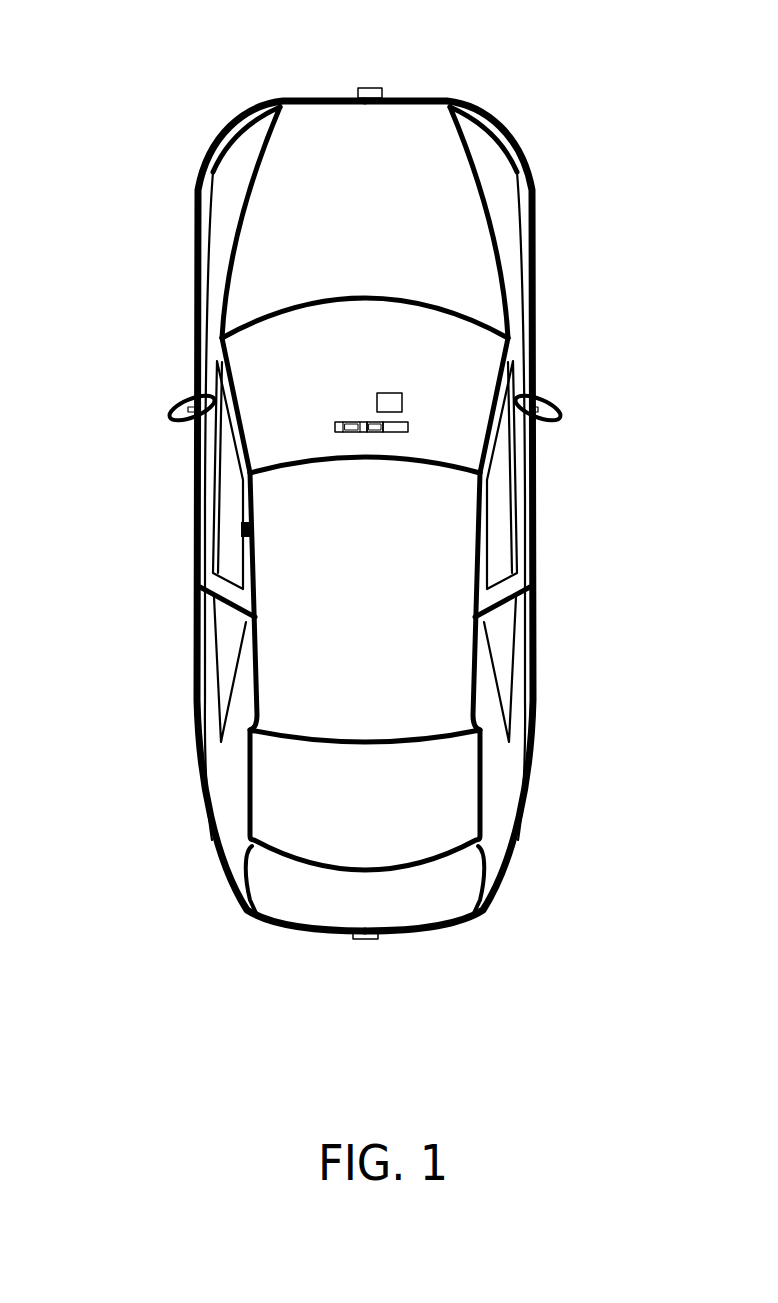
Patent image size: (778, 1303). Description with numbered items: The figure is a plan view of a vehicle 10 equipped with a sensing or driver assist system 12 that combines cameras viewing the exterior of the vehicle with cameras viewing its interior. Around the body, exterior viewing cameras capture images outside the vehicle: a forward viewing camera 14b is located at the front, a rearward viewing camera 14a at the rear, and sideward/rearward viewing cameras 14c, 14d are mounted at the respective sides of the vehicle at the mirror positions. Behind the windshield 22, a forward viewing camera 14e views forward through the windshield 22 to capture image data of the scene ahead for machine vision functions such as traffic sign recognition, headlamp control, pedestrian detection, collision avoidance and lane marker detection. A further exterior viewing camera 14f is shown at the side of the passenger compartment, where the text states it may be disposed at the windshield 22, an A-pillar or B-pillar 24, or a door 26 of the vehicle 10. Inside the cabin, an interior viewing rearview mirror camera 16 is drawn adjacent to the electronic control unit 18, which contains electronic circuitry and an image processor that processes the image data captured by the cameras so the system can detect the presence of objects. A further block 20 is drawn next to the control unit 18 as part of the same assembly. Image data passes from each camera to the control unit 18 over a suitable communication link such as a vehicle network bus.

The vehicle 10 is at (131, 114).
The driver assist system 12 is at (327, 947).
The rearward viewing camera 14a is at (372, 939).
The forward viewing camera 14b is at (373, 88).
The sideward/rearward viewing camera 14c is at (175, 403).
The sideward/rearward viewing camera 14d is at (550, 403).
The forward viewing camera 14e is at (392, 392).
The exterior viewing camera 14f is at (241, 527).
The rearview mirror camera 16 is at (347, 422).
The electronic control unit 18 is at (370, 422).
The memory 20 is at (410, 422).
The windshield 22 is at (253, 355).
The A-pillar or B-pillar 24 is at (502, 588).
The door 26 is at (533, 503).